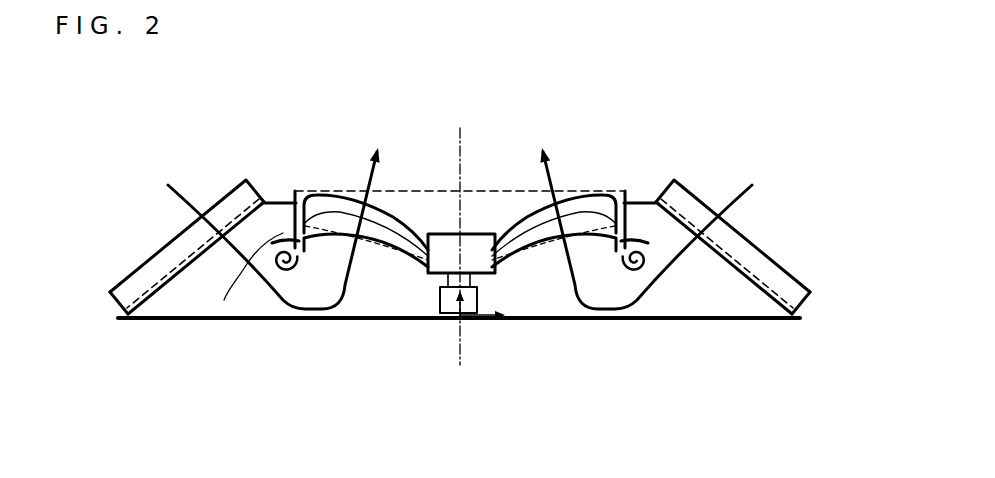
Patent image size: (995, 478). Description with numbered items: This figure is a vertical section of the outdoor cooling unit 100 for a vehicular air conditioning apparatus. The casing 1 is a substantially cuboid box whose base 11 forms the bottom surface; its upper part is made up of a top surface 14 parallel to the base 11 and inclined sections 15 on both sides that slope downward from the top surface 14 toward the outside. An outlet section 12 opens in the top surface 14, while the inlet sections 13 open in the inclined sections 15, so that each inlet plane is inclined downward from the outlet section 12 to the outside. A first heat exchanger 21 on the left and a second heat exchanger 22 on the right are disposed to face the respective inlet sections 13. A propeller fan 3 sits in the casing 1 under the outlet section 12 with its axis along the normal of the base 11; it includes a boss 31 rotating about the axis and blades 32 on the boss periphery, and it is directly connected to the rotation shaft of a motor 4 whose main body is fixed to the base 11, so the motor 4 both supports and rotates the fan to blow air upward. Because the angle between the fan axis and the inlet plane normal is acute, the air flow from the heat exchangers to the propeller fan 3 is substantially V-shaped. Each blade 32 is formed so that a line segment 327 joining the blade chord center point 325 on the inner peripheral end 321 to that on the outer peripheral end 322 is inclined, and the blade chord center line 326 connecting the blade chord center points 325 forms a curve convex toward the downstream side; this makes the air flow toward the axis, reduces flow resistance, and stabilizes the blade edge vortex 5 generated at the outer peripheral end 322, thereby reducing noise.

The outdoor cooling unit 100 is at (494, 458).
The casing 1 is at (623, 334).
The base 11 is at (540, 320).
The outlet section 12 is at (300, 192).
The inlet section 13 is at (175, 276).
The top surface 14 is at (640, 200).
The inclined section 15 is at (183, 240).
The first heat exchanger 21 is at (215, 215).
The second heat exchanger 22 is at (708, 218).
The propeller fan 3 is at (495, 212).
The boss 31 is at (477, 240).
The blade 32 is at (400, 227).
The inner peripheral end 321 is at (413, 267).
The outer peripheral end 322 is at (224, 300).
The blade chord center point 325 is at (305, 242).
The blade chord center line 326 is at (340, 230).
The line segment 327 is at (545, 247).
The motor 4 is at (440, 320).
The blade edge vortex 5 is at (282, 267).